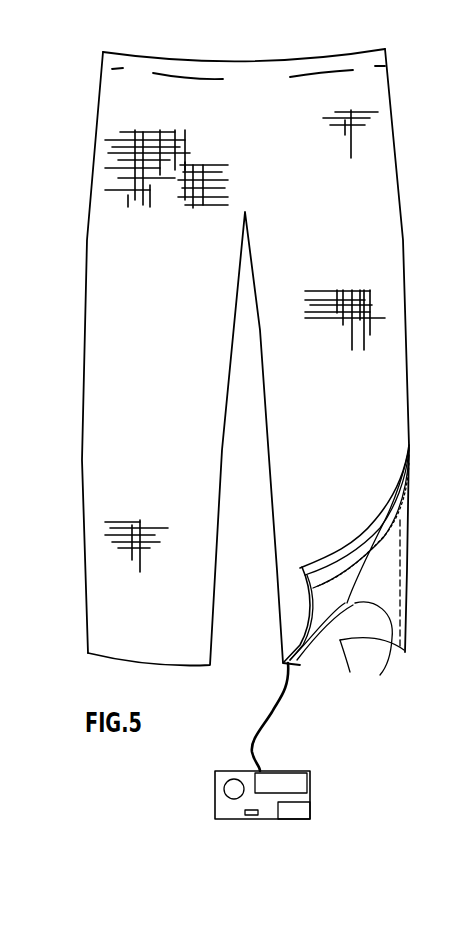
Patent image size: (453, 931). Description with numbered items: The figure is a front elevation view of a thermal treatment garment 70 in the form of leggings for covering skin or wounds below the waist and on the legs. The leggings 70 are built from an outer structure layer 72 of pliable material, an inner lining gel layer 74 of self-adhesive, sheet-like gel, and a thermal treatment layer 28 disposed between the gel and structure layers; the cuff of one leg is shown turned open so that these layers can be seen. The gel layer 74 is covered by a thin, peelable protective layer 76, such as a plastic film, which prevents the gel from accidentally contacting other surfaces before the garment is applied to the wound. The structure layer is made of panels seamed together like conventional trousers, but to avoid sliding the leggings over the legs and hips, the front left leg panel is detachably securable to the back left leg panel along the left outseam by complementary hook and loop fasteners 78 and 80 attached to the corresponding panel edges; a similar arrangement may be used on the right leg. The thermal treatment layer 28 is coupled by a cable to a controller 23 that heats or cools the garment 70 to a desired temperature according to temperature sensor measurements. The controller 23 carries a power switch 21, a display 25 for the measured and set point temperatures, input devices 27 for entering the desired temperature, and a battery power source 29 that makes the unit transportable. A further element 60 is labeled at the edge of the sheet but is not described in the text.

The thermal treatment garment 70 is at (410, 110).
The outer structure layer 72 is at (328, 557).
The inner lining gel layer 74 is at (360, 610).
The protective peelable layer 76 is at (384, 625).
The hook and loop fastener 78 is at (385, 512).
The hook and loop fastener 80 is at (408, 527).
The thermal treatment layer 28 is at (350, 540).
The conductive patch 60 is at (3, 643).
The power switch 21 is at (224, 789).
The controller 23 is at (228, 763).
The display 25 is at (293, 782).
The input devices 27 is at (257, 817).
The power source 29 is at (295, 813).